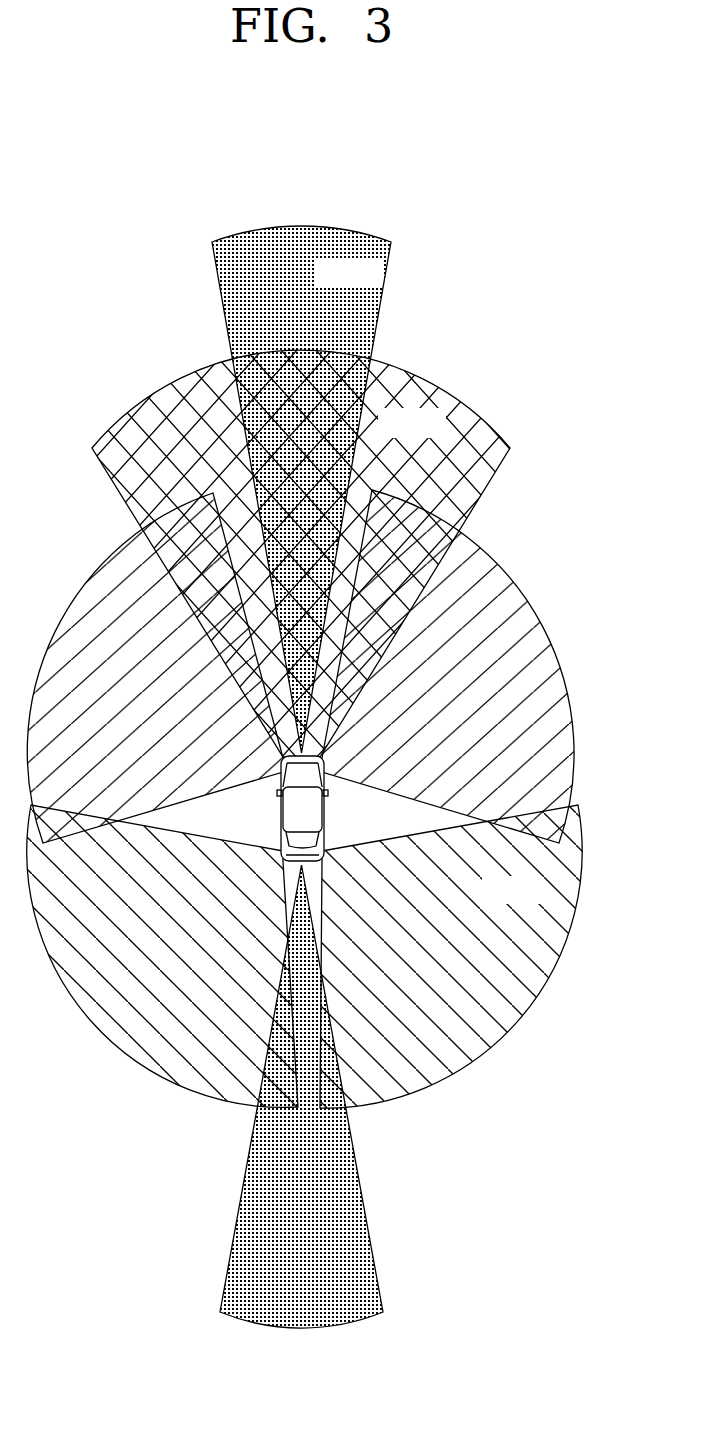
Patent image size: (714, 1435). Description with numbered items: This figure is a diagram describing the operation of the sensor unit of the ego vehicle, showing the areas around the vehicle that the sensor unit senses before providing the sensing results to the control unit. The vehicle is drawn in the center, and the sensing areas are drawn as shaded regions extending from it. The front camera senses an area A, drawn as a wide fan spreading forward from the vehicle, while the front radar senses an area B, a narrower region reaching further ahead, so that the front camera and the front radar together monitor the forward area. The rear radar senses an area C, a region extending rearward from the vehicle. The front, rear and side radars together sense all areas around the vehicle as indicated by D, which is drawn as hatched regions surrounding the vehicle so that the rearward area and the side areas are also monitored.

The area A is at (455, 472).
The area B is at (268, 273).
The area C is at (285, 1212).
The all areas around the vehicle D is at (507, 638).